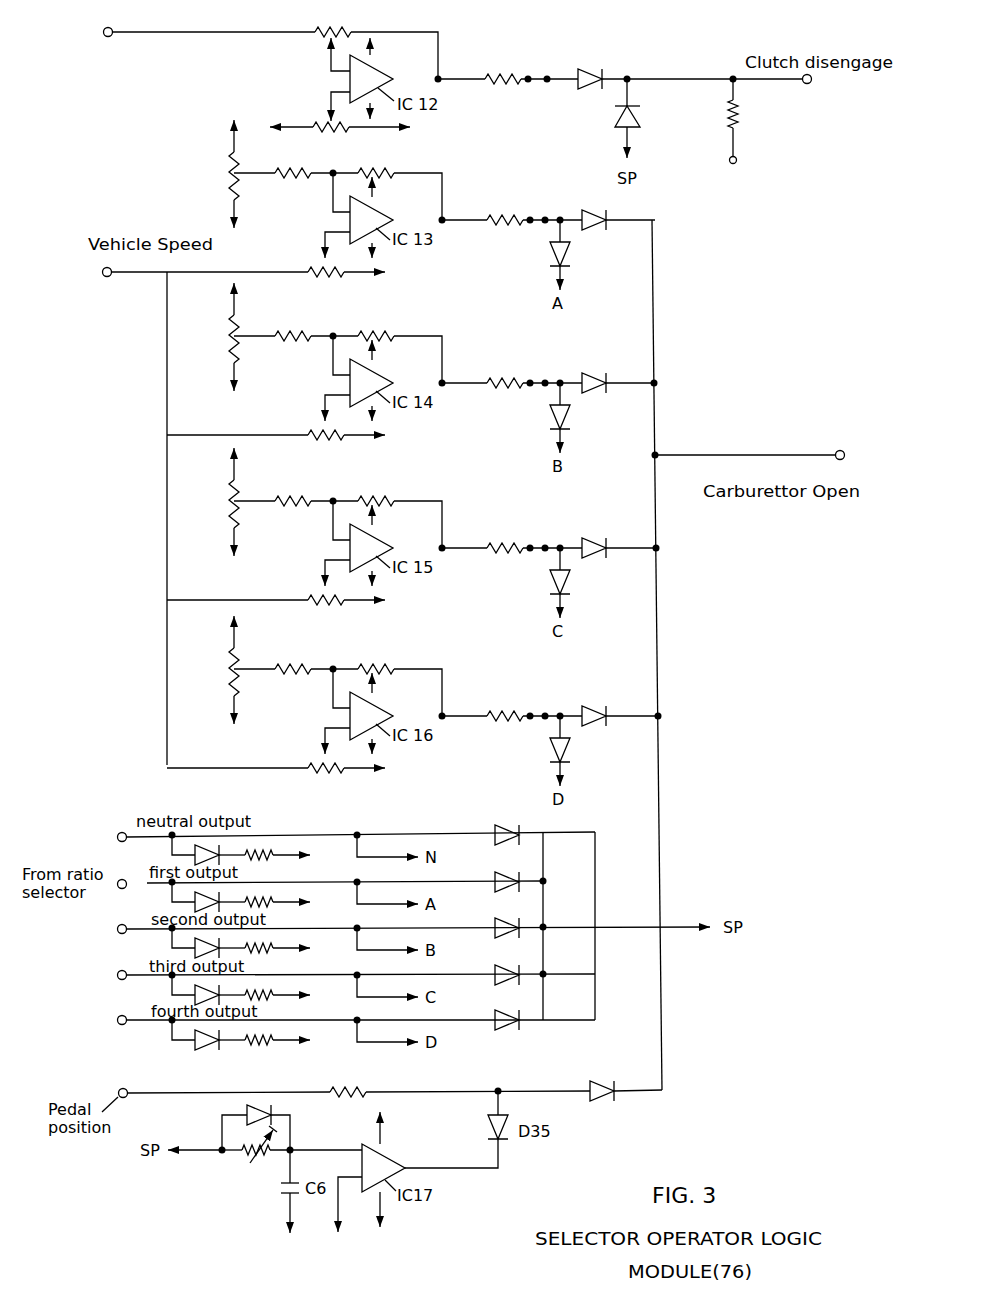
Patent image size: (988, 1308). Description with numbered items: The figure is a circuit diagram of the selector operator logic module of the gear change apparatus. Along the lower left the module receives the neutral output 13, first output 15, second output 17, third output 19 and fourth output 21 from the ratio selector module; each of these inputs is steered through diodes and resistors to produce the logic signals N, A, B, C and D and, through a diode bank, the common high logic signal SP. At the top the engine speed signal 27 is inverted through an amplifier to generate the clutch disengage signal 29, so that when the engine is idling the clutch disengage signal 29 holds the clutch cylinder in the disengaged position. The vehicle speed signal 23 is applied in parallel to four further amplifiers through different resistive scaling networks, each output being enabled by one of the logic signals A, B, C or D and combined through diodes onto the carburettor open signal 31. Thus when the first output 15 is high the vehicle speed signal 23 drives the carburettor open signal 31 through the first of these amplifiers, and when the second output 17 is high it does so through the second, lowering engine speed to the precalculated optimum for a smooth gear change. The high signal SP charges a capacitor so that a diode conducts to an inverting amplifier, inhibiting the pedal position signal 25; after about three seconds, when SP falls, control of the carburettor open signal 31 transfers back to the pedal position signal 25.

The neutral output 13 is at (355, 827).
The first output 15 is at (331, 876).
The second output 17 is at (414, 922).
The third output 19 is at (357, 968).
The fourth output 21 is at (357, 1013).
The vehicle speed signal 23 is at (135, 265).
The pedal position signal 25 is at (225, 1086).
The engine speed signal 27 is at (209, 21).
The clutch disengage signal 29 is at (775, 91).
The carburettor open signal 31 is at (751, 467).